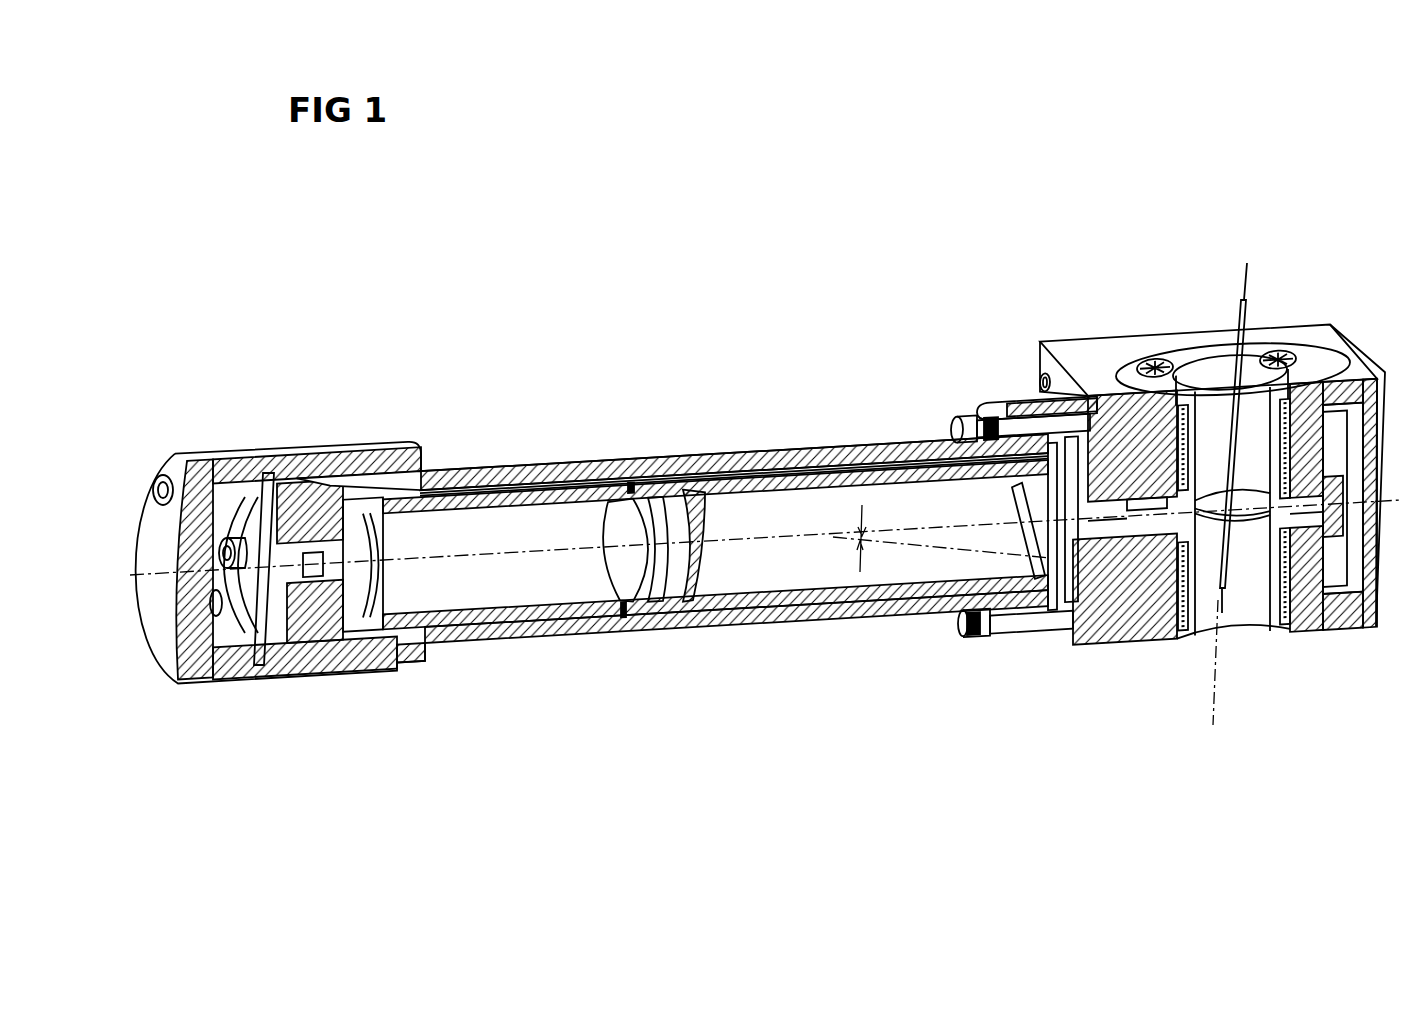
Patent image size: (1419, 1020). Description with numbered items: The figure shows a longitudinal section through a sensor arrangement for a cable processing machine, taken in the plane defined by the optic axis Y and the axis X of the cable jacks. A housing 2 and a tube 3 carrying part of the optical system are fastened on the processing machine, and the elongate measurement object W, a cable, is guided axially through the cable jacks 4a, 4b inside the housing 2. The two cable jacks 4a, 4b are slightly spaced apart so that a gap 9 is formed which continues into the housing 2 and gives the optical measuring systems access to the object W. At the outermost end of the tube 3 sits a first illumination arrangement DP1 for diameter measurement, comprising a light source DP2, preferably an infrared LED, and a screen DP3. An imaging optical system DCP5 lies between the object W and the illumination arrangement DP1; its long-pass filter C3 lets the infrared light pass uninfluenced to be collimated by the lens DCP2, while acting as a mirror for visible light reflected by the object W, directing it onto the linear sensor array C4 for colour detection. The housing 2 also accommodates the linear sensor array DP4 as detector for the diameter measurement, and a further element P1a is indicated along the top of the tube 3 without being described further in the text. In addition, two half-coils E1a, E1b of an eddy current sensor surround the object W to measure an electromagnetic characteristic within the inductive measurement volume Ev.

The first illumination arrangement DP1 is at (378, 701).
The light source DP2 is at (294, 492).
The screen DP3 is at (383, 462).
The imaging optical system DCP5 is at (711, 447).
The tube top face P1a is at (950, 442).
The gap 9 is at (1052, 430).
The housing 2 is at (1053, 338).
The half-coil E1a is at (1085, 352).
The cable jack 4a is at (1217, 400).
The measurement object W is at (1240, 310).
The linear sensor array DP4 is at (1350, 343).
The tube 3 is at (489, 640).
The long-pass filter C3 is at (640, 572).
The lens DCP2 is at (680, 563).
The optic axis Y is at (835, 538).
The linear sensor array C4 is at (1008, 612).
The inductive measurement volume Ev is at (1247, 603).
The axis of the cable jacks X is at (1217, 680).
The cable jack 4b is at (1285, 590).
The half-coil E1b is at (1292, 597).